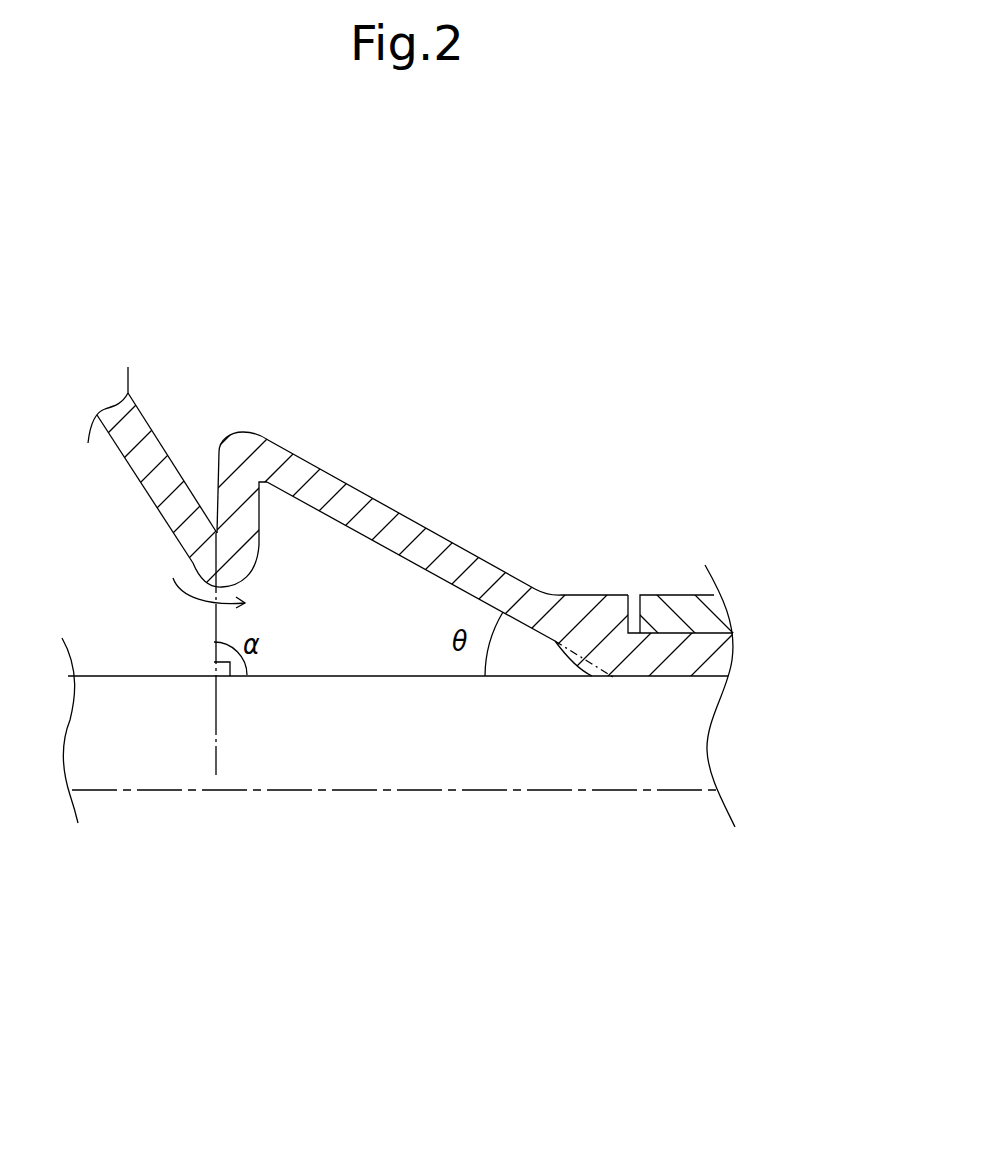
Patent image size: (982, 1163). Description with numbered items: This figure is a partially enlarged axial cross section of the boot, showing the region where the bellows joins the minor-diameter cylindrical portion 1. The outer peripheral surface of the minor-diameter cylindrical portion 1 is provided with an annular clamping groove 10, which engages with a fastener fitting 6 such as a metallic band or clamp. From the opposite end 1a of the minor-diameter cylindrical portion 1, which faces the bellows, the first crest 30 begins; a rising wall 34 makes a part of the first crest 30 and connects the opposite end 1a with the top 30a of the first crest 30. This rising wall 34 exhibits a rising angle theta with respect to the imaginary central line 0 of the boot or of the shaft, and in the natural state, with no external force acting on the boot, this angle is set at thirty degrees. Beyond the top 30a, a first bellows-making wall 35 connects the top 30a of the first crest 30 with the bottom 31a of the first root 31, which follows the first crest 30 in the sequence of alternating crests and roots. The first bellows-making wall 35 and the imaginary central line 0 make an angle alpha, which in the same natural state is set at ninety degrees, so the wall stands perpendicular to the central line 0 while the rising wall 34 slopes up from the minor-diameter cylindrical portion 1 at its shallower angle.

The imaginary central line 0 is at (513, 790).
The minor-diameter cylindrical portion 1 is at (627, 588).
The opposite end of the minor-diameter cylindrical portion 1a is at (600, 622).
The fastener fitting 6 is at (705, 565).
The annular clamping groove 10 is at (678, 630).
The first crest 30 is at (273, 413).
The top of the first crest 30a is at (238, 434).
The first root 31 is at (188, 457).
The bottom of the first root 31a is at (216, 533).
The rising wall 34 is at (400, 530).
The first bellows-making wall 35 is at (248, 512).